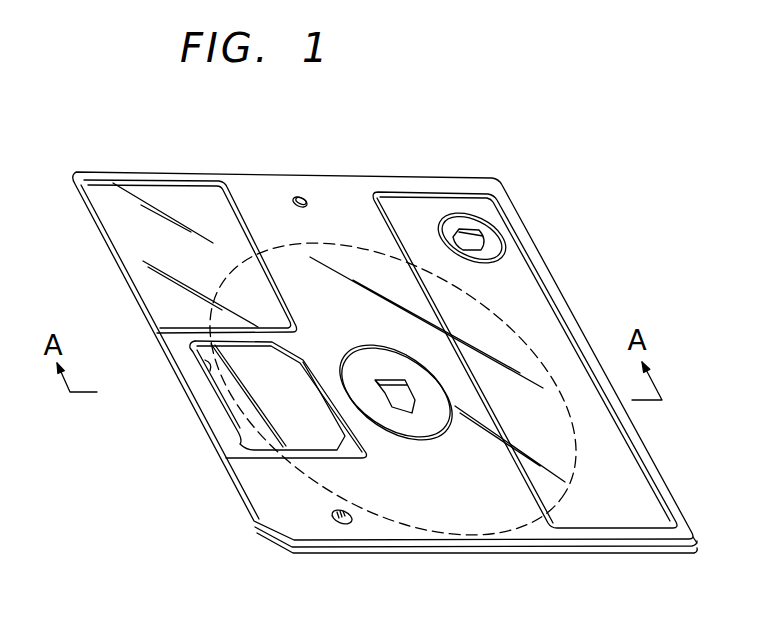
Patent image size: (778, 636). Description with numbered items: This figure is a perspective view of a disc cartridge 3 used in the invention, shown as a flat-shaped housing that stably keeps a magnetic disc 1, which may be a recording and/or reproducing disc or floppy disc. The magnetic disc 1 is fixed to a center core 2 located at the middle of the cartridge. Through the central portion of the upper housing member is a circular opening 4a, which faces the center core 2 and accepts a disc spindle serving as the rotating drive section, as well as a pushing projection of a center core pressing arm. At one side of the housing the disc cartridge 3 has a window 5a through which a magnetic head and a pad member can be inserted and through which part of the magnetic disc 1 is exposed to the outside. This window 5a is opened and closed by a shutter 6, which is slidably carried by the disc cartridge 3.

The magnetic disc 1 is at (243, 398).
The center core 2 is at (397, 423).
The disc cartridge 3 is at (345, 190).
The circular opening 4a is at (433, 428).
The window 5a is at (205, 362).
The shutter 6 is at (128, 248).